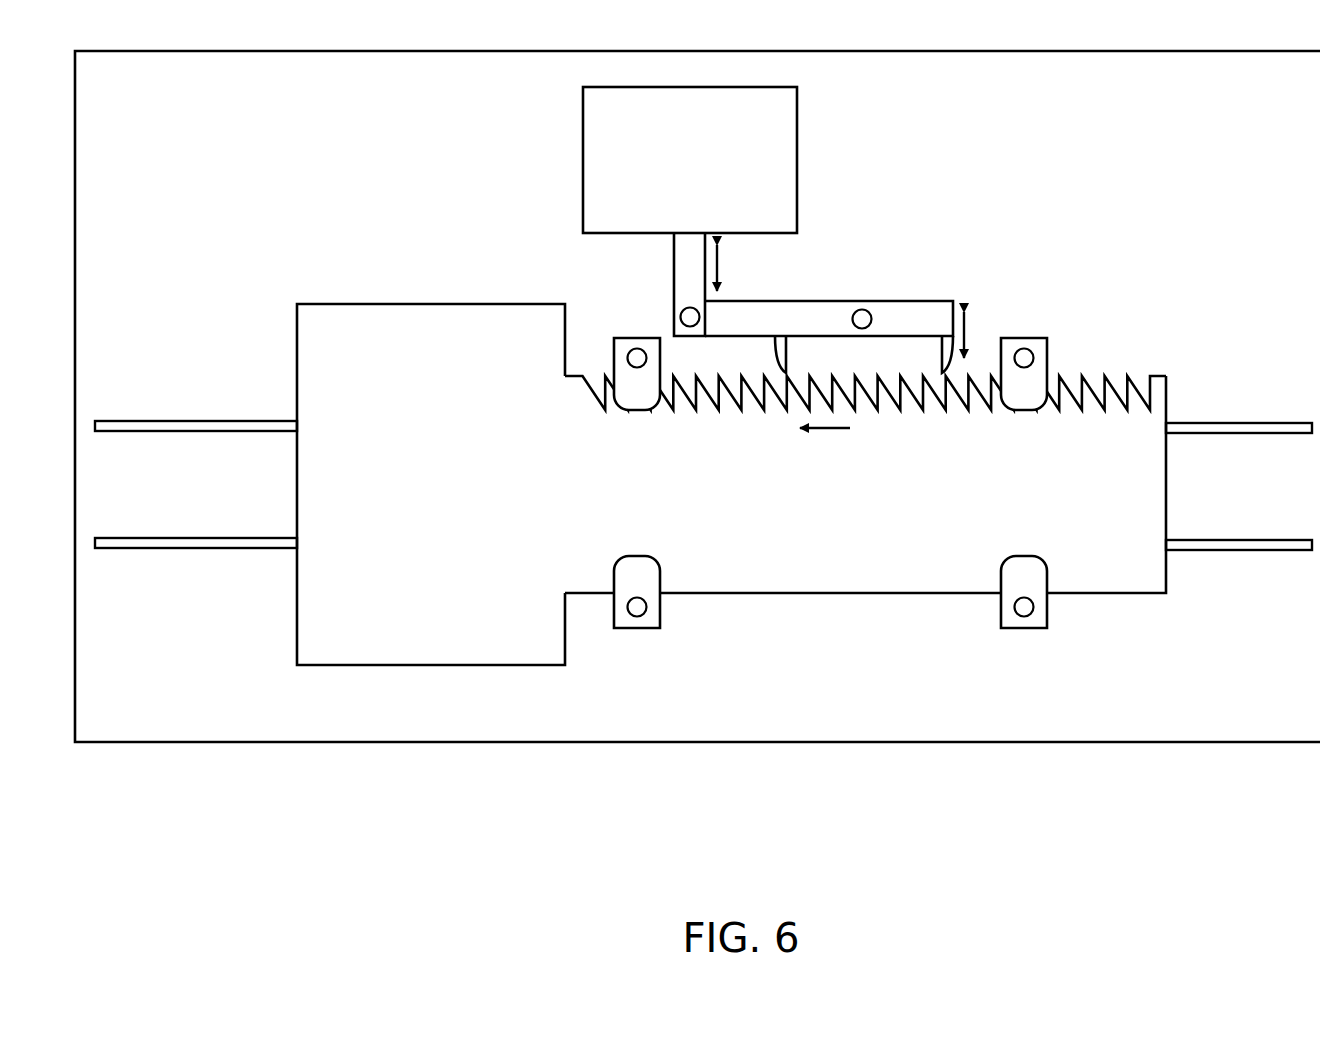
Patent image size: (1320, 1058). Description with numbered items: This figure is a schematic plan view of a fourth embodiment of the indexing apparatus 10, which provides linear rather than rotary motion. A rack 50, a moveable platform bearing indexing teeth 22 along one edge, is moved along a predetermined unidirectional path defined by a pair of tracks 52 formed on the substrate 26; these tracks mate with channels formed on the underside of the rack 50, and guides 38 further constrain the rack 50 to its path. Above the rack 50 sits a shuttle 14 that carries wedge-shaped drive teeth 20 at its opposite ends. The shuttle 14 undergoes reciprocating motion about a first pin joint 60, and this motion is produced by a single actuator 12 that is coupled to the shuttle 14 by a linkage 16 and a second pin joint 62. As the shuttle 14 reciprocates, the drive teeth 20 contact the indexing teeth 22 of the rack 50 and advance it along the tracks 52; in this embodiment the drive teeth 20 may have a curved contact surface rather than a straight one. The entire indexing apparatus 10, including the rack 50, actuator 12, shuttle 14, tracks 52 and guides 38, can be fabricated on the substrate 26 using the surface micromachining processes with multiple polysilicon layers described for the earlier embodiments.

The indexing apparatus 10 is at (1031, 780).
The actuator 12 is at (673, 182).
The shuttle 14 is at (904, 328).
The linkage 16 is at (674, 250).
The drive teeth 20 is at (941, 351).
The indexing teeth 22 is at (705, 407).
The substrate 26 is at (123, 689).
The guides 38 is at (1028, 339).
The rack 50 is at (416, 497).
The tracks 52 is at (182, 432).
The first pin joint 60 is at (866, 309).
The second pin joint 62 is at (681, 313).